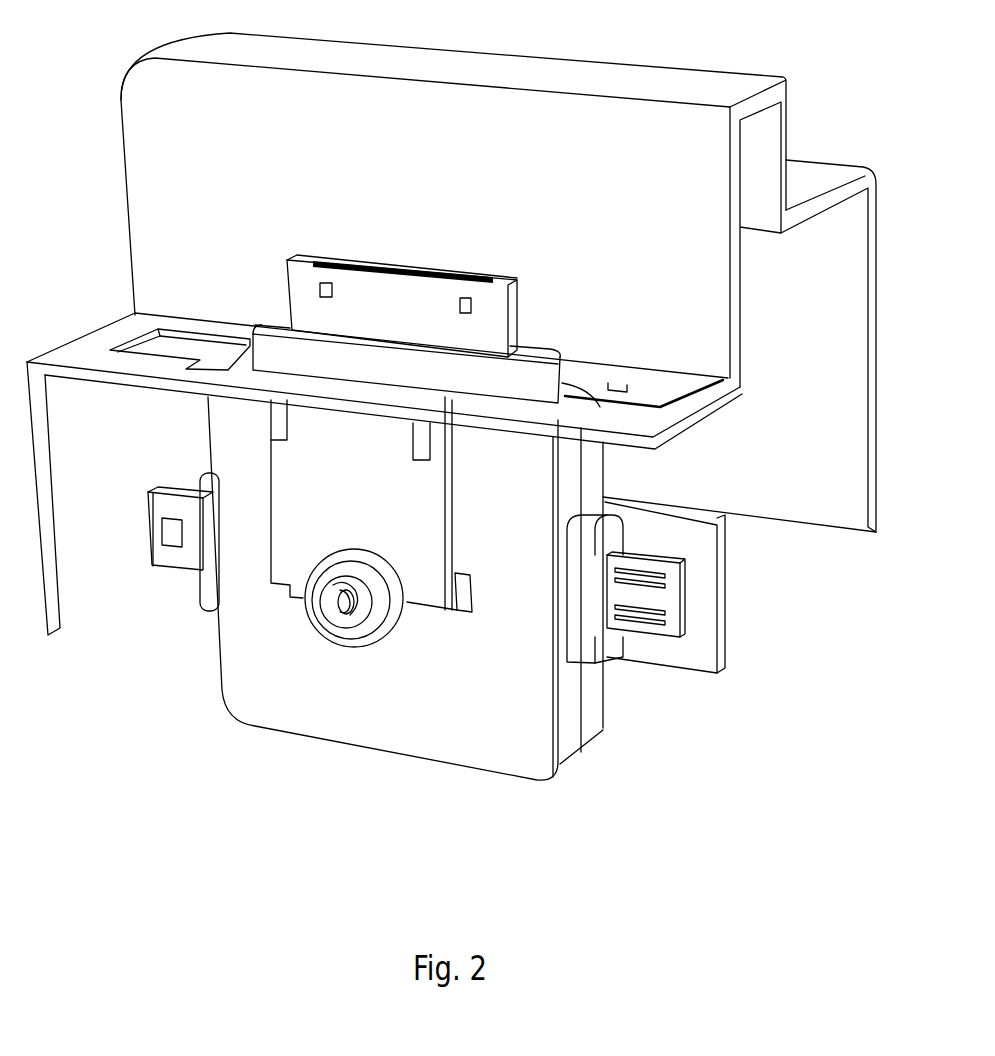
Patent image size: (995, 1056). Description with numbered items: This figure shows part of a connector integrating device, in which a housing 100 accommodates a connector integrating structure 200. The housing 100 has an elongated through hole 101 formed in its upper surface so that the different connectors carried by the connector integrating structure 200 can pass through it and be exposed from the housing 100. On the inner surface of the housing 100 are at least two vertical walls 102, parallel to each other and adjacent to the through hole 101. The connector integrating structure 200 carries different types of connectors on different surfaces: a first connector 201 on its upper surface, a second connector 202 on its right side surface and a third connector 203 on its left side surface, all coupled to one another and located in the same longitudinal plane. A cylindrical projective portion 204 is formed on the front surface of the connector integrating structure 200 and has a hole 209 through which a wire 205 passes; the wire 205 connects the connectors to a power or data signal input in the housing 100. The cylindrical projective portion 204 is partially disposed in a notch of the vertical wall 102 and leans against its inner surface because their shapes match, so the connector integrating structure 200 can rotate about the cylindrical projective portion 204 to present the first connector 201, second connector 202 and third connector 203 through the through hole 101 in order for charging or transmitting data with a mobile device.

The housing 100 is at (660, 121).
The elongated through hole 101 is at (627, 402).
The vertical wall 102 is at (345, 447).
The connector integrating structure 200 is at (523, 800).
The first connector 201 is at (419, 290).
The second connector 202 is at (665, 598).
The third connector 203 is at (189, 557).
The cylindrical projective portion 204 is at (377, 626).
The wire 205 is at (342, 598).
The hole 209 is at (327, 605).